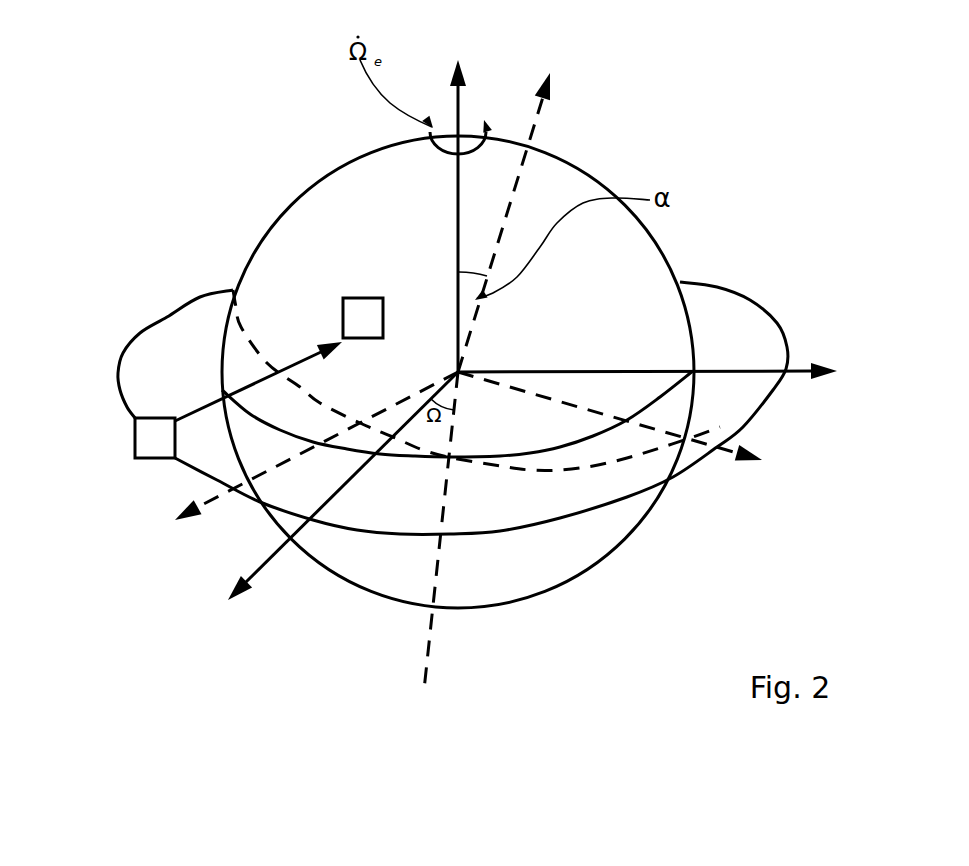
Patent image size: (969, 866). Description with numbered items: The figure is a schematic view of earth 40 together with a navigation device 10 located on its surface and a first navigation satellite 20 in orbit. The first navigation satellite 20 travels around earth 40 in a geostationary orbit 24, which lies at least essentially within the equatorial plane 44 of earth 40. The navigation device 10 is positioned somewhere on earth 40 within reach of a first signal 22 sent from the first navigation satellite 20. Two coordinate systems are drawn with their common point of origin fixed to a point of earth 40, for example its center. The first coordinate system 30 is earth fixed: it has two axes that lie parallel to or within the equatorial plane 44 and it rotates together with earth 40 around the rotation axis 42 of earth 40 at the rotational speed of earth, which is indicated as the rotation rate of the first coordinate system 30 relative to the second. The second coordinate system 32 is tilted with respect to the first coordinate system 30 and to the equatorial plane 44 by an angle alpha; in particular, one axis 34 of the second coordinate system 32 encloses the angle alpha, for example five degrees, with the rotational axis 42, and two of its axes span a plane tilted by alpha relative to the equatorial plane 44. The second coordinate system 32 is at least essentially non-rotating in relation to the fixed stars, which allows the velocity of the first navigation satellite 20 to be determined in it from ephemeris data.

The navigation device 10 is at (363, 320).
The first navigation satellite 20 is at (153, 438).
The first signal 22 is at (257, 378).
The geostationary orbit 24 is at (130, 347).
The first coordinate system 30 is at (455, 187).
The second coordinate system 32 is at (512, 217).
The axis of the second coordinate system 34 is at (540, 108).
The earth 40 is at (353, 202).
The rotation axis 42 is at (460, 95).
The equatorial plane 44 is at (677, 387).